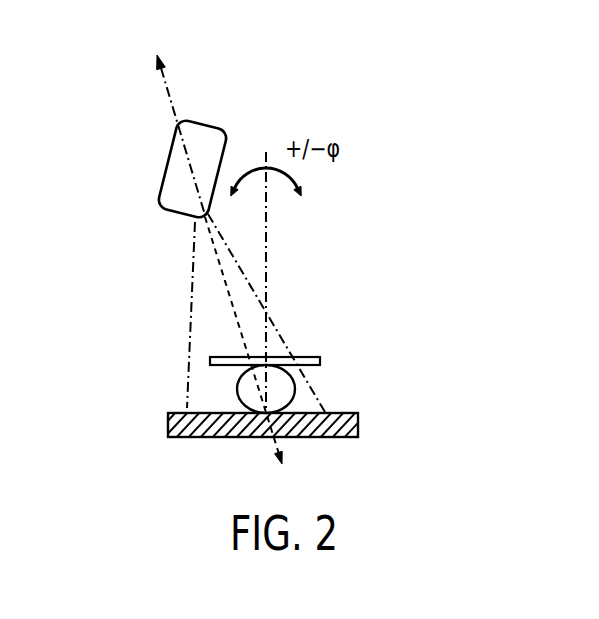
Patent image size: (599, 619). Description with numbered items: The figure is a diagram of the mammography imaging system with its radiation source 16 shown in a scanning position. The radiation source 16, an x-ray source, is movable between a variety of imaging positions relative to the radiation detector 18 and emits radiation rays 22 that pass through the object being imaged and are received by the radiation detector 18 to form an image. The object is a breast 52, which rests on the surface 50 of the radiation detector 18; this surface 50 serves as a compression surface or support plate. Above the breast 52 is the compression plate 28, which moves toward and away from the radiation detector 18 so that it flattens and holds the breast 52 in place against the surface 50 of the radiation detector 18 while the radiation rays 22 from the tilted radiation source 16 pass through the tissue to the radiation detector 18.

The radiation source 16 is at (169, 181).
The radiation rays 22 is at (191, 317).
The compression plate 28 is at (322, 360).
The breast 52 is at (296, 387).
The surface of the radiation detector 50 is at (357, 421).
The radiation detector 18 is at (311, 437).